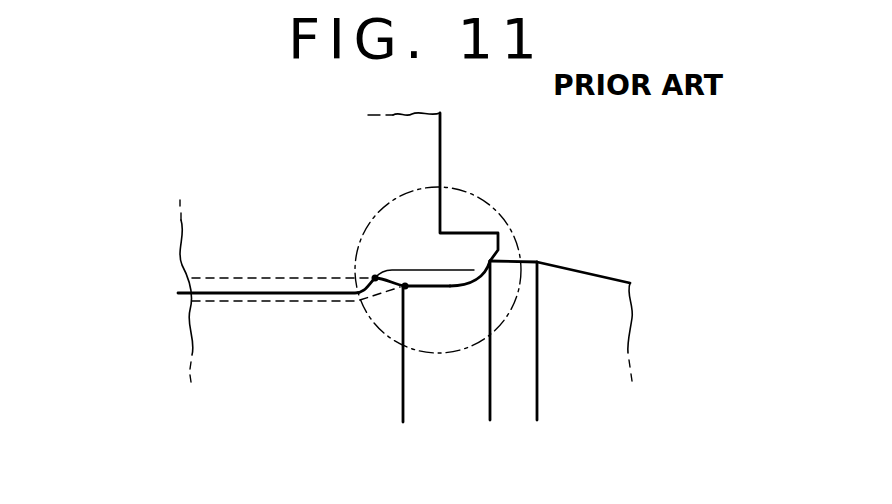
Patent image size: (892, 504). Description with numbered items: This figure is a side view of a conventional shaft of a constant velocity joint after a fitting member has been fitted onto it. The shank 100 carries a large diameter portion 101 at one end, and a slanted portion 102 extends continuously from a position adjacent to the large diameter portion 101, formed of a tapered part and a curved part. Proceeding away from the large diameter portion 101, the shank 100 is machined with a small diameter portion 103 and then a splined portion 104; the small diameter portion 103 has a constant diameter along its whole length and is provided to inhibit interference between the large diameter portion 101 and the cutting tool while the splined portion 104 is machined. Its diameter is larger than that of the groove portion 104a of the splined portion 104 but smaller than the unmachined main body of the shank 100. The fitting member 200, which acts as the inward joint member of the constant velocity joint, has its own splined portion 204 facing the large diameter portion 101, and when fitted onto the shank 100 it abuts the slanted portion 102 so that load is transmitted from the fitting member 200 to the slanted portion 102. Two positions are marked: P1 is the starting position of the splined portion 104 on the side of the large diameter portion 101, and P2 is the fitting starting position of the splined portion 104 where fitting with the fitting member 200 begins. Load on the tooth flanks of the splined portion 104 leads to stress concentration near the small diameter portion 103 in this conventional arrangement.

The shank 100 is at (637, 181).
The fitting member 200 is at (441, 127).
The large diameter portion 101 is at (537, 262).
The slanted portion 102 is at (475, 270).
The small diameter portion 103 is at (437, 276).
The splined portion 104 is at (285, 281).
The groove portion 104a is at (221, 288).
The splined portion 204 is at (311, 297).
The starting position P1 is at (405, 284).
The fitting starting position P2 is at (375, 278).